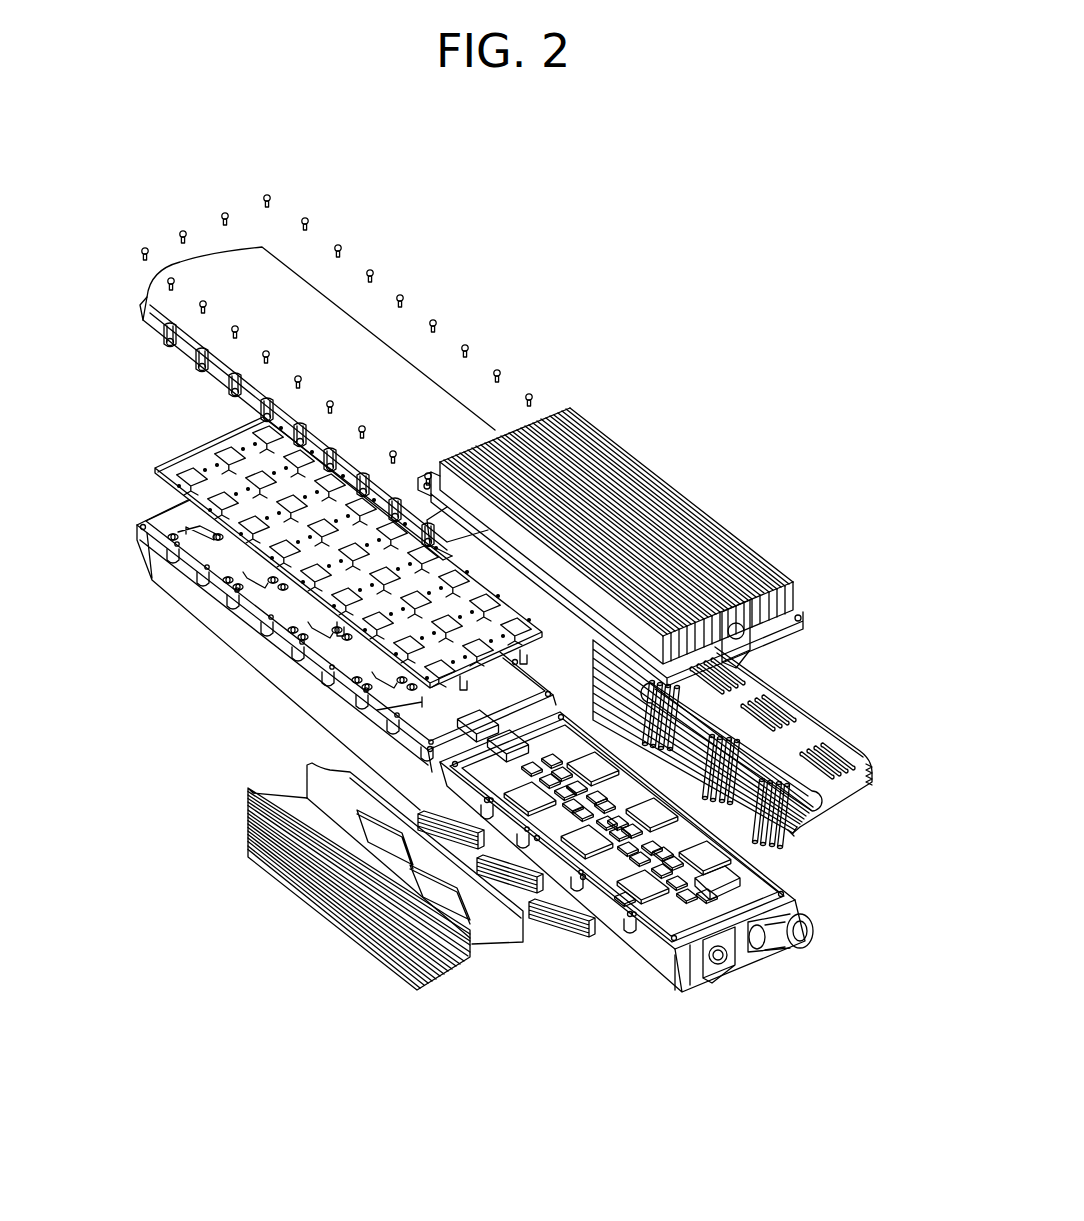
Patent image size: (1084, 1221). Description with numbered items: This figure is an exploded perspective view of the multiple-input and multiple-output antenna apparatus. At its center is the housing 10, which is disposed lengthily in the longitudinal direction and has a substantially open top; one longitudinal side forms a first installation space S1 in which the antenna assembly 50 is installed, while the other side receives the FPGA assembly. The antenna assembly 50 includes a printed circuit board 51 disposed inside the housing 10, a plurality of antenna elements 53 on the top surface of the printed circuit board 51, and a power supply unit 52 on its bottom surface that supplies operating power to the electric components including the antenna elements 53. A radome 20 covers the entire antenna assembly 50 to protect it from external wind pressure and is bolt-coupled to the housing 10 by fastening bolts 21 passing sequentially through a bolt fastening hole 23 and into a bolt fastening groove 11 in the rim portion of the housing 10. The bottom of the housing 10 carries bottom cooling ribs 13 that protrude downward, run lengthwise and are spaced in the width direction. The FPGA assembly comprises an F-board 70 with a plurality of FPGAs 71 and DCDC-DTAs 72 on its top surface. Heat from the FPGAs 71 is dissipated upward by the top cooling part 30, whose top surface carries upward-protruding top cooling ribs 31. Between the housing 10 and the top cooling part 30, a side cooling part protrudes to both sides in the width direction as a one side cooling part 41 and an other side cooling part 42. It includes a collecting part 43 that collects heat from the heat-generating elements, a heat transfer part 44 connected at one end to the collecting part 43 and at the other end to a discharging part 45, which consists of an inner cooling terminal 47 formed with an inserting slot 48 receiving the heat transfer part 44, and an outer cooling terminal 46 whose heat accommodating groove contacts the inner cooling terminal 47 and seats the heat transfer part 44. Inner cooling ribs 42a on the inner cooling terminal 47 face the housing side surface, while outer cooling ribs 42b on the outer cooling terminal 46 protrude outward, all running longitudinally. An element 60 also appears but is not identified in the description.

The housing 10 is at (471, 789).
The bolt fastening groove 11 is at (232, 603).
The bottom cooling ribs 13 is at (678, 984).
The radome 20 is at (296, 398).
The fastening bolt 21 is at (306, 222).
The bolt fastening hole 23 is at (155, 342).
The top cooling part 30 is at (630, 547).
The top cooling ribs 31 is at (660, 487).
The one side cooling part 41 is at (375, 902).
The other side cooling part 42 is at (737, 732).
The inner cooling ribs 42a is at (793, 826).
The outer cooling ribs 42b is at (328, 922).
The collecting part 43 is at (575, 927).
The heat transfer part 44 is at (542, 917).
The discharging part 45 is at (332, 902).
The outer cooling terminal 46 is at (365, 948).
The inner cooling terminal 47 is at (306, 777).
The inserting slot 48 is at (507, 932).
The antenna assembly 50 is at (314, 534).
The printed circuit board 51 is at (205, 447).
The power supply unit 52 is at (175, 452).
The antenna elements 53 is at (176, 464).
The sealing member 60 is at (212, 538).
The F-board 70 is at (636, 866).
The FPGAs 71 is at (643, 892).
The DCDC-DTAs 72 is at (710, 887).
The first installation space S1 is at (420, 703).